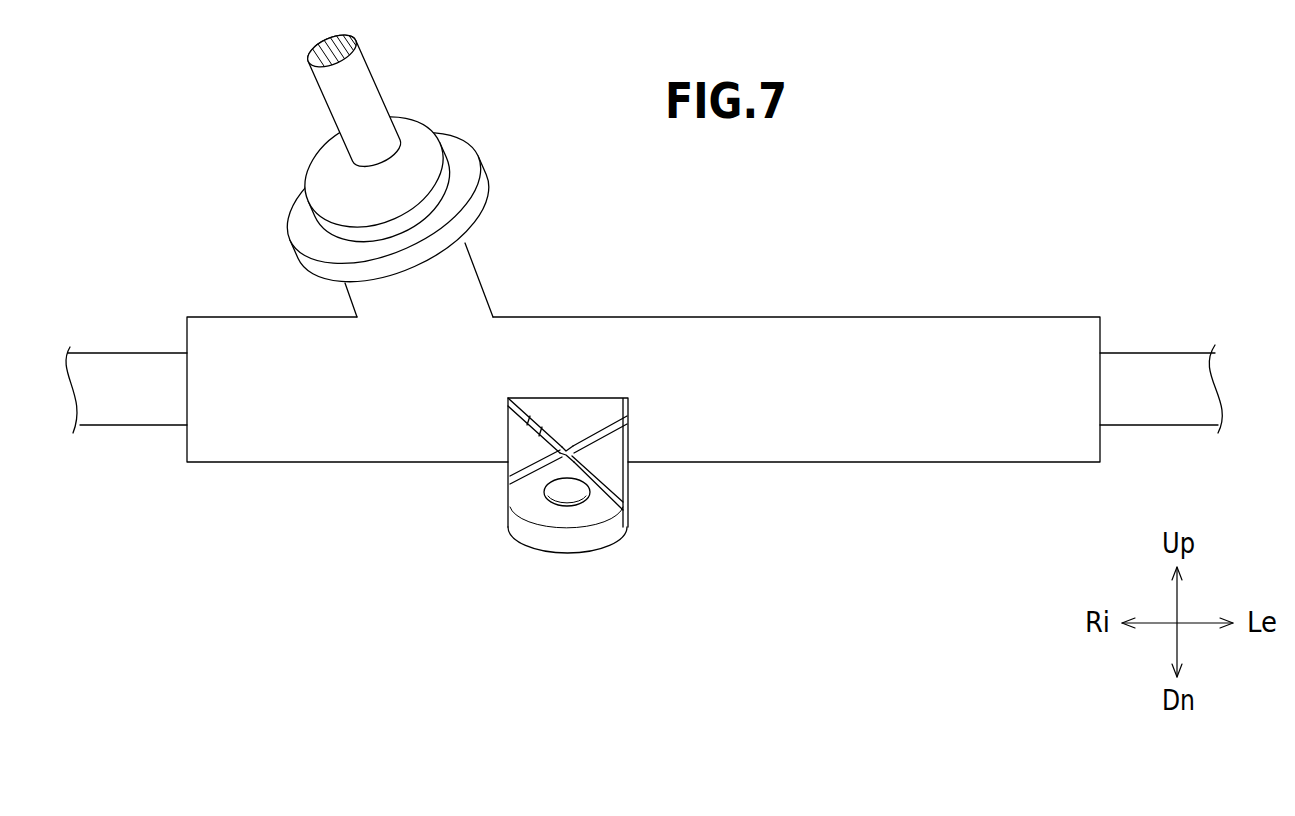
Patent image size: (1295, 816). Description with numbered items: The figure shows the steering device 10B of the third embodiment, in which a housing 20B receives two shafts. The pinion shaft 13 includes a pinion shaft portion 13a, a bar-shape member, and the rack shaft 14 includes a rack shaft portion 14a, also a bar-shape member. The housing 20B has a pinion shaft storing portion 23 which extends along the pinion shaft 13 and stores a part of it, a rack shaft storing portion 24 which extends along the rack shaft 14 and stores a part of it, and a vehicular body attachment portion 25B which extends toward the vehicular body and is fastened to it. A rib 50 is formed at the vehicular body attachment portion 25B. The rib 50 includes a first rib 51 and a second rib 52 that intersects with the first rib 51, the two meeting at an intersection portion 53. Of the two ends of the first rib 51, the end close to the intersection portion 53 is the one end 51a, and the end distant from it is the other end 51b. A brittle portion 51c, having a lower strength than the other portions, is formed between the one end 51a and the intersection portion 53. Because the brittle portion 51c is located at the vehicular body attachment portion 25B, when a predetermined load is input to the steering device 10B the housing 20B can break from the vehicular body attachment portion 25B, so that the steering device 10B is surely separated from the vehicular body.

The steering device 10B is at (960, 90).
The pinion shaft 13 is at (370, 78).
The pinion shaft portion 13a is at (334, 45).
The rack shaft 14 is at (1147, 353).
The rack shaft portion 14a is at (1161, 389).
The housing 20B is at (862, 315).
The pinion shaft storing portion 23 is at (463, 276).
The rack shaft storing portion 24 is at (728, 345).
The vehicular body attachment portion 25B is at (567, 540).
The rib 50 is at (728, 473).
The first rib 51 is at (628, 486).
The one end 51a is at (510, 398).
The other end 51b is at (628, 500).
The brittle portion 51c is at (530, 427).
The second rib 52 is at (623, 442).
The intersection portion 53 is at (568, 450).